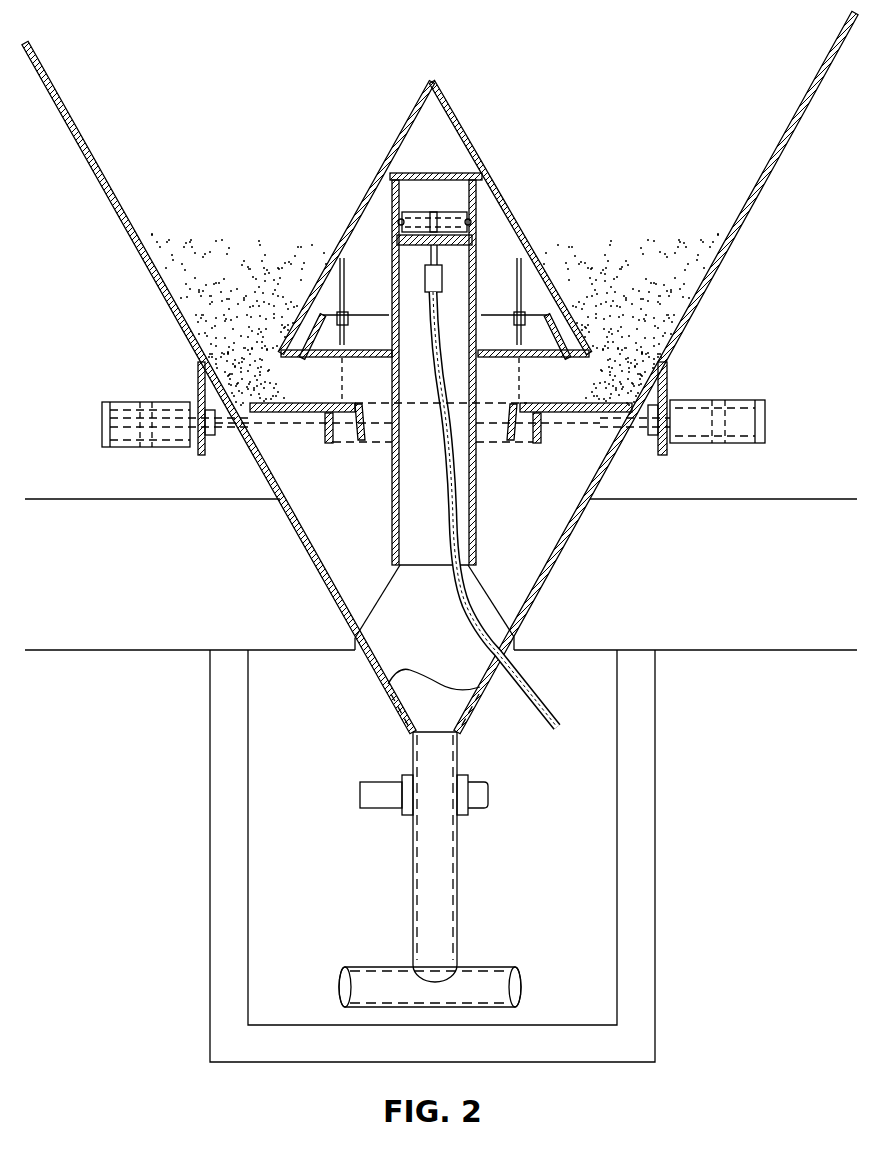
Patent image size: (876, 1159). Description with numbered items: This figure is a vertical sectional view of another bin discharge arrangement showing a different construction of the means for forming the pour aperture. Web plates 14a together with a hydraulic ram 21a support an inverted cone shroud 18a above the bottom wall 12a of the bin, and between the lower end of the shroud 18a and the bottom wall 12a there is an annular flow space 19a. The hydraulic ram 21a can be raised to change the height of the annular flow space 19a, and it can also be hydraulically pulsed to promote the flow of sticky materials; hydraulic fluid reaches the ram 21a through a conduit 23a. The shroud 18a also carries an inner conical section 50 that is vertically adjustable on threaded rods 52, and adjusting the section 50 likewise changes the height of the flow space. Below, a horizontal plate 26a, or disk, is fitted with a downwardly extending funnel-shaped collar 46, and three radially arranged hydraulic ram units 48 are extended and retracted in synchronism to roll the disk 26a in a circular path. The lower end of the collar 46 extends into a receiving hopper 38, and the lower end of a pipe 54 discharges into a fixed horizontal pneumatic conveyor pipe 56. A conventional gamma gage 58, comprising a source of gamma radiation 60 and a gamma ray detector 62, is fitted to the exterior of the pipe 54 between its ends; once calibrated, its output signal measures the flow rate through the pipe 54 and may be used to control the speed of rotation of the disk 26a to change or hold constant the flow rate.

The bottom wall 12a is at (667, 372).
The web plates 14a is at (350, 472).
The inverted cone shroud 18a is at (456, 129).
The annular flow space 19a is at (290, 376).
The hydraulic ram 21a is at (472, 258).
The conduit 23a is at (549, 690).
The horizontal plate 26a is at (610, 400).
The receiving hopper 38 is at (540, 572).
The funnel-shaped collar 46 is at (346, 440).
The hydraulic ram units 48 is at (151, 450).
The inner conical section 50 is at (375, 346).
The threaded rods 52 is at (344, 290).
The pipe 54 is at (460, 921).
The pneumatic conveyor pipe 56 is at (491, 965).
The gamma gage 58 is at (361, 795).
The source of gamma radiation 60 is at (378, 807).
The gamma ray detector 62 is at (484, 808).